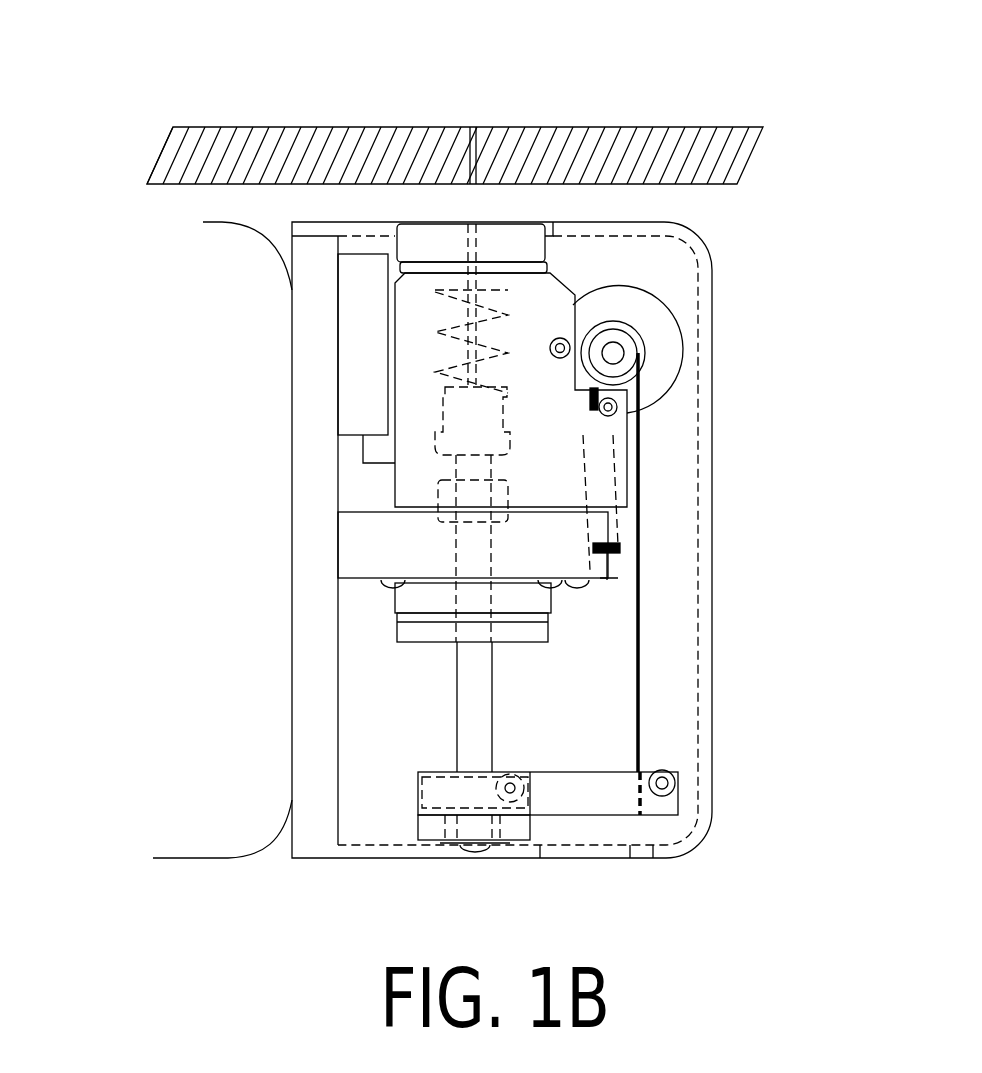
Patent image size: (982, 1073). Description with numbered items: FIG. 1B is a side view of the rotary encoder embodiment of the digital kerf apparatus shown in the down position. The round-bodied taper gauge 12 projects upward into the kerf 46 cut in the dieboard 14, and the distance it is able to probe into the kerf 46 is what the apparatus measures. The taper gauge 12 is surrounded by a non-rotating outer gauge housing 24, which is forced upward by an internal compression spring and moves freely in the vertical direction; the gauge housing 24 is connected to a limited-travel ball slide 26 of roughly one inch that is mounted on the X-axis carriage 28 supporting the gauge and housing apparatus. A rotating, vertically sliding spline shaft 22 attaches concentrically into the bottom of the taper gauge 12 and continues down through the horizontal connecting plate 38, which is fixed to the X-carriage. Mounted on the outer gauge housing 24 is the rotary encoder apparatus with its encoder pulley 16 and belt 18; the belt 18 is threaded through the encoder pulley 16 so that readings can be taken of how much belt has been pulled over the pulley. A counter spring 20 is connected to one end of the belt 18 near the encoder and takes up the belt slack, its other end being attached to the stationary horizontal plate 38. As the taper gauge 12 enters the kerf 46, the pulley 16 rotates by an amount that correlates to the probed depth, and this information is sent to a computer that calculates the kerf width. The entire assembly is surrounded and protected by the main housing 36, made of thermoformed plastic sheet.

The taper gauge 12 is at (477, 253).
The dieboard 14 is at (292, 127).
The encoder pulley 16 is at (642, 327).
The belt 18 is at (647, 458).
The counter spring 20 is at (628, 553).
The spline shaft 22 is at (493, 682).
The outer gauge housing 24 is at (405, 318).
The ball slide 26 is at (357, 412).
The X-axis carriage 28 is at (318, 795).
The main housing 36 is at (638, 862).
The horizontal connecting plate 38 is at (425, 543).
The kerf 46 is at (473, 127).